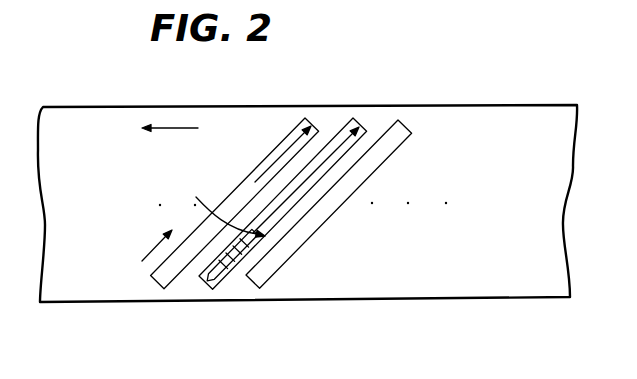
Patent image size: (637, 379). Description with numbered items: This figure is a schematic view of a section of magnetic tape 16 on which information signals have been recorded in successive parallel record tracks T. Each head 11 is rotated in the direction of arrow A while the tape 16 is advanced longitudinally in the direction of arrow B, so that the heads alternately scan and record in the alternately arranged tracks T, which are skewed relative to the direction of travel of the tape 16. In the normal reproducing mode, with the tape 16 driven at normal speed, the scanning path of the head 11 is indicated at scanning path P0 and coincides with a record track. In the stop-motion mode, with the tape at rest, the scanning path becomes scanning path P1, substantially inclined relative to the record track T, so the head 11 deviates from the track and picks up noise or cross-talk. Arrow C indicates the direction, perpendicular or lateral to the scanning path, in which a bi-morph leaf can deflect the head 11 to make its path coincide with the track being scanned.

The magnetic tape 16 is at (510, 127).
The head 11 is at (229, 265).
The record tracks T is at (316, 134).
The arrow A is at (153, 250).
The arrow B is at (165, 129).
The arrow C is at (221, 209).
The scanning path p0 P0 is at (306, 170).
The scanning path p1 P1 is at (262, 196).